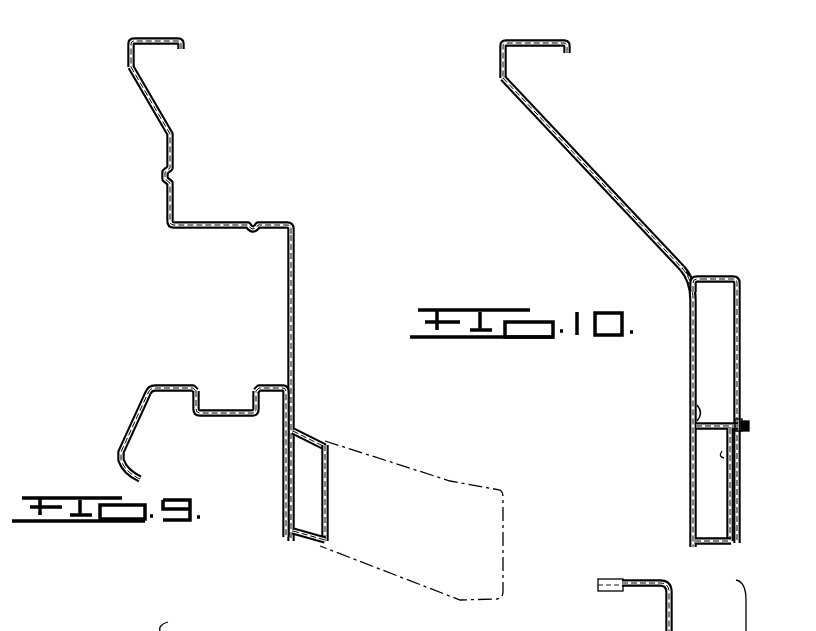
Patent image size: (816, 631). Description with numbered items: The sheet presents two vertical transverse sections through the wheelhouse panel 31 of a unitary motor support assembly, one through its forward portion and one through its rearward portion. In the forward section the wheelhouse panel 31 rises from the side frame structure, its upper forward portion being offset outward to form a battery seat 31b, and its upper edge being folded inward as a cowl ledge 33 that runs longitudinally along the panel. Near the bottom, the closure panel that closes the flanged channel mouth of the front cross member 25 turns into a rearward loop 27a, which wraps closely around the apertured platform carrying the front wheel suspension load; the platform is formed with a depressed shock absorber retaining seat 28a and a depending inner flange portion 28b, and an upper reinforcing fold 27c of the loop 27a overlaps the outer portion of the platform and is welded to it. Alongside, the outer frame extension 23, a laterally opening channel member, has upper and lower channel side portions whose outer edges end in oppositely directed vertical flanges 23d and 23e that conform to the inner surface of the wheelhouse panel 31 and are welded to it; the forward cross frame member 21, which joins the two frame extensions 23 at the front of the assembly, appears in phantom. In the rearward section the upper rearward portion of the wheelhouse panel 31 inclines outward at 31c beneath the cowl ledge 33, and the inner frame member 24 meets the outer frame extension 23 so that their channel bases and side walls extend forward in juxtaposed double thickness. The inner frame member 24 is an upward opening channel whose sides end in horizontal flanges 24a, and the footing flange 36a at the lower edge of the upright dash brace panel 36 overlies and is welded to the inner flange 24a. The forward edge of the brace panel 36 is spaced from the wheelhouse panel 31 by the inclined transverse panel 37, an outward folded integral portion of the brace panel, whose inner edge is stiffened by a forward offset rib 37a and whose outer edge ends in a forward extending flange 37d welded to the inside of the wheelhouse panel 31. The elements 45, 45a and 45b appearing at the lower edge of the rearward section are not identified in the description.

In FIG. 9, the forward cross frame member 21 is at (366, 471).
In FIG. 9, the outer frame extension 23 is at (334, 498).
In FIG. 10, the outer frame extension 23 is at (704, 488).
In FIG. 9, the upper channel side flange 23d is at (297, 430).
In FIG. 10, the upper channel side flange 23d is at (697, 411).
In FIG. 9, the lower channel side flange 23e is at (291, 543).
In FIG. 10, the lower channel side flange 23e is at (695, 547).
In FIG. 10, the inner frame member 24 is at (733, 503).
In FIG. 10, the inner frame member flanges 24a is at (748, 432).
In FIG. 10, the front cross member 25 is at (729, 456).
In FIG. 9, the rearward loop 27a is at (148, 393).
In FIG. 9, the upper reinforcing fold 27c is at (160, 385).
In FIG. 9, the shock absorber retaining seat 28a is at (200, 415).
In FIG. 9, the depending inner flange portion 28b is at (287, 433).
In FIG. 9, the wheelhouse panel 31 is at (294, 352).
In FIG. 10, the wheelhouse panel 31 is at (691, 364).
In FIG. 9, the battery seat 31b is at (187, 222).
In FIG. 10, the outward inclined upper rearward portion 31c is at (600, 178).
In FIG. 9, the cowl ledge 33 is at (181, 36).
In FIG. 10, the cowl ledge 33 is at (545, 42).
In FIG. 10, the dash brace panel 36 is at (740, 382).
In FIG. 10, the footing flange 36a is at (746, 425).
In FIG. 10, the transverse panel 37 is at (697, 276).
In FIG. 10, the forward offset rib 37a is at (722, 277).
In FIG. 10, the forward extending flange 37d is at (703, 268).
In FIG. 9, the lower support member 45 is at (175, 622).
In FIG. 10, the lower support tab 45a is at (640, 588).
In FIG. 10, the lower support leg 45b is at (673, 613).